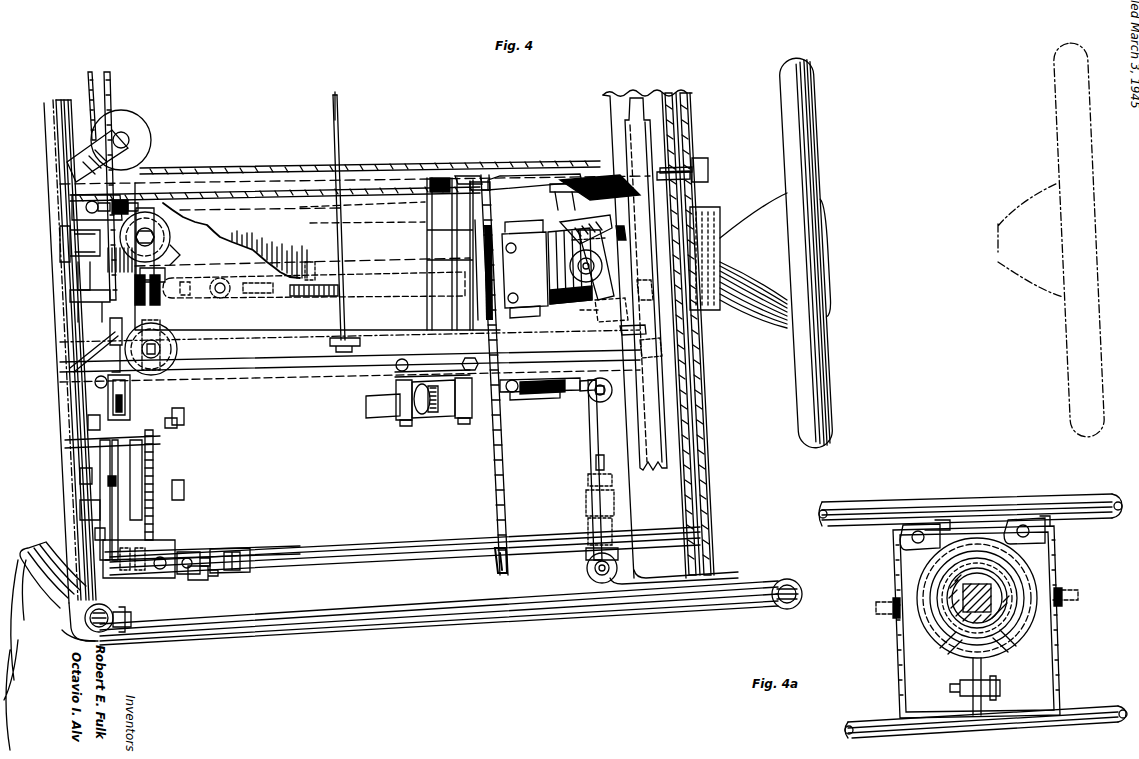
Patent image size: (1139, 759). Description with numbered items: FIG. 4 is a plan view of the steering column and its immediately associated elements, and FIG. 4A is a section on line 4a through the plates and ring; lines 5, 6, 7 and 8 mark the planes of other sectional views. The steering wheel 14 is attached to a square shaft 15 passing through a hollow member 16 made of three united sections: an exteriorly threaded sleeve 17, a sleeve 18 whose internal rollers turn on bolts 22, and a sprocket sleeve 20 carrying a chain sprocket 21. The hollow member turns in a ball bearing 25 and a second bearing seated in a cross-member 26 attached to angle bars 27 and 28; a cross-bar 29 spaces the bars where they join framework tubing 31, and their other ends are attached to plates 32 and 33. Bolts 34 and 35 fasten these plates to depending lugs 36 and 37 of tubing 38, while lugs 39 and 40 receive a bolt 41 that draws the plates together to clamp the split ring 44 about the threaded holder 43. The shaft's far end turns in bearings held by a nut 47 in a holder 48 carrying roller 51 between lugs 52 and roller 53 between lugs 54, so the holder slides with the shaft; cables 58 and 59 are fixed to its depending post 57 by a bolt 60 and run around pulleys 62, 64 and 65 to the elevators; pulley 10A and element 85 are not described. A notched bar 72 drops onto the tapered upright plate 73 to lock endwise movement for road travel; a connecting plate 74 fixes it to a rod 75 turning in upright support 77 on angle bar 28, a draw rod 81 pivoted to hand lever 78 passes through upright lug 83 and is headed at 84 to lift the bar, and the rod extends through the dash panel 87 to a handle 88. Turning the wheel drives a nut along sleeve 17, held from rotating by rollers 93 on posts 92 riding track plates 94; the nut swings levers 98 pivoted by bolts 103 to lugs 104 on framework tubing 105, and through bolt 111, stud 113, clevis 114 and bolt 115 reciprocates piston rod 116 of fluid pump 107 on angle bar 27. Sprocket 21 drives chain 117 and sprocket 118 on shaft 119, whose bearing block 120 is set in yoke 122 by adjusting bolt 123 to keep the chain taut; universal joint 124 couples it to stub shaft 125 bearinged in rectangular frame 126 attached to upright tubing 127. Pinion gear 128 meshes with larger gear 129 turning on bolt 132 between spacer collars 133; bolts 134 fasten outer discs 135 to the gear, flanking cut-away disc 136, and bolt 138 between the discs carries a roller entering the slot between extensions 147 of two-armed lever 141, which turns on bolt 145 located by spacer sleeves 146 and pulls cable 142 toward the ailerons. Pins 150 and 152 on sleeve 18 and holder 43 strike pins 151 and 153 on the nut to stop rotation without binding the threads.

In FIG. 4, the section line 4a— 4a is at (651, 440).
In FIG. 4, the section line 5— 5 is at (140, 300).
In FIG. 4, the section line 6— 6 is at (602, 82).
In FIG. 4, the section line 7— 7 is at (521, 150).
In FIG. 4, the section line 8— 8 is at (360, 50).
In FIG. 4, the pulley 10A is at (578, 254).
In FIG. 4, the steering wheel 14 is at (806, 88).
In FIG. 4, the square shaft 15 is at (386, 262).
In FIG. 4A, the square shaft 15 is at (950, 622).
In FIG. 4, the hollow member 16 is at (504, 176).
In FIG. 4, the exteriorly threaded sleeve 17 is at (556, 310).
In FIG. 4A, the exteriorly threaded sleeve 17 is at (1006, 626).
In FIG. 4, the sleeve 18 is at (522, 314).
In FIG. 4, the sprocket sleeve 20 is at (494, 312).
In FIG. 4, the chain sprocket 21 is at (482, 228).
In FIG. 4, the bolt 22 is at (512, 242).
In FIG. 4A, the ball bearing 25 is at (1020, 620).
In FIG. 4, the cross-member 26 is at (466, 330).
In FIG. 4, the angle bar 27 is at (376, 362).
In FIG. 4A, the angle bar 27 is at (1062, 600).
In FIG. 4, the angle bar 28 is at (374, 200).
In FIG. 4A, the angle bar 28 is at (890, 614).
In FIG. 4, the cross-bar 29 is at (72, 232).
In FIG. 4, the tubing 31 is at (64, 352).
In FIG. 4, the plate 32 is at (626, 366).
In FIG. 4A, the plate 32 is at (1052, 562).
In FIG. 4A, the plate 33 is at (896, 556).
In FIG. 4A, the bolt 34 is at (1052, 510).
In FIG. 4A, the bolt 35 is at (910, 512).
In FIG. 4, the depending lug 36 is at (634, 280).
In FIG. 4A, the depending lug 36 is at (1020, 512).
In FIG. 4, the depending lug 37 is at (634, 248).
In FIG. 4A, the depending lug 37 is at (935, 512).
In FIG. 4, the tubing 38 is at (628, 132).
In FIG. 4A, the tubing 38 is at (866, 500).
In FIG. 4A, the lug 39 is at (992, 672).
In FIG. 4A, the lug 40 is at (972, 680).
In FIG. 4A, the bolt 41 is at (960, 690).
In FIG. 4A, the holder 43 is at (950, 646).
In FIG. 4A, the ring 44 is at (917, 590).
In FIG. 4, the nut 47 is at (120, 302).
In FIG. 4, the bearing holder 48 is at (170, 272).
In FIG. 4, the roller 51 is at (175, 350).
In FIG. 4, the lugs 52 is at (186, 308).
In FIG. 4, the roller 53 is at (170, 240).
In FIG. 4, the lugs 54 is at (183, 252).
In FIG. 4, the depending post 57 is at (210, 306).
In FIG. 4, the cable 58 is at (118, 62).
In FIG. 4, the cable 59 is at (92, 72).
In FIG. 4, the bolt 60 is at (243, 284).
In FIG. 4, the cable pulley 62 is at (235, 240).
In FIG. 4, the pulley 64 is at (556, 182).
In FIG. 4, the pulley 65 is at (148, 128).
In FIG. 4, the notched bar 72 is at (316, 266).
In FIG. 4, the upright plate 73 is at (160, 306).
In FIG. 4, the connecting plate 74 is at (418, 234).
In FIG. 4, the rod 75 is at (478, 174).
In FIG. 4, the upright support 77 is at (444, 174).
In FIG. 4, the hand lever 78 is at (126, 198).
In FIG. 4, the draw rod 81 is at (341, 128).
In FIG. 4, the upright lug 83 is at (325, 301).
In FIG. 4, the head 84 is at (330, 341).
In FIG. 4, the bolt 85 is at (93, 196).
In FIG. 4, the dash panel 87 is at (682, 152).
In FIG. 4, the handle 88 is at (718, 166).
In FIG. 4, the posts 92 is at (596, 176).
In FIG. 4, the rollers 93 is at (662, 184).
In FIG. 4, the track plates 94 is at (584, 250).
In FIG. 4, the levers 98 is at (586, 464).
In FIG. 4, the bolts 103 is at (586, 558).
In FIG. 4, the lugs 104 is at (588, 574).
In FIG. 4, the framework tubing 105 is at (496, 617).
In FIG. 4, the fluid pump 107 is at (448, 418).
In FIG. 4, the bolt 111 is at (600, 402).
In FIG. 4, the stud 113 is at (584, 400).
In FIG. 4, the clevis 114 is at (562, 402).
In FIG. 4, the bolt 115 is at (394, 376).
In FIG. 4, the piston rod 116 is at (504, 400).
In FIG. 4, the chain 117 is at (490, 464).
In FIG. 4, the sprocket 118 is at (496, 573).
In FIG. 4, the shaft 119 is at (442, 540).
In FIG. 4, the bearing block 120 is at (584, 534).
In FIG. 4, the yoke 122 is at (582, 508).
In FIG. 4, the adjusting bolt 123 is at (582, 486).
In FIG. 4, the universal joint 124 is at (198, 582).
In FIG. 4, the stub shaft 125 is at (128, 582).
In FIG. 4, the rectangularly shaped frame 126 is at (104, 480).
In FIG. 4, the framework tubing 127 is at (106, 634).
In FIG. 4, the pinion gear 128 is at (156, 452).
In FIG. 4, the gear 129 is at (168, 524).
In FIG. 4, the bolt 132 is at (186, 490).
In FIG. 4, the spacer collars 133 is at (100, 506).
In FIG. 4, the bolts 134 is at (94, 478).
In FIG. 4, the outer discs 135 is at (96, 534).
In FIG. 4, the cut-away disc 136 is at (160, 516).
In FIG. 4, the bolt 138 is at (86, 440).
In FIG. 4, the two-armed lever 141 is at (130, 392).
In FIG. 4, the cable 142 is at (70, 368).
In FIG. 4, the bolt 145 is at (184, 416).
In FIG. 4, the spacer sleeves 146 is at (88, 422).
In FIG. 4, the extensions 147 is at (144, 444).
In FIG. 4, the pin 150 is at (525, 264).
In FIG. 4, the pin 151 is at (574, 304).
In FIG. 4, the pin 152 is at (580, 308).
In FIG. 4, the pin 153 is at (618, 230).